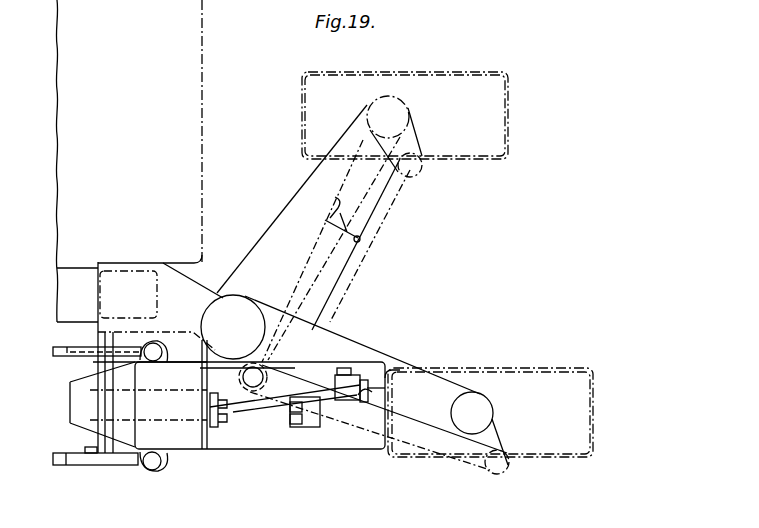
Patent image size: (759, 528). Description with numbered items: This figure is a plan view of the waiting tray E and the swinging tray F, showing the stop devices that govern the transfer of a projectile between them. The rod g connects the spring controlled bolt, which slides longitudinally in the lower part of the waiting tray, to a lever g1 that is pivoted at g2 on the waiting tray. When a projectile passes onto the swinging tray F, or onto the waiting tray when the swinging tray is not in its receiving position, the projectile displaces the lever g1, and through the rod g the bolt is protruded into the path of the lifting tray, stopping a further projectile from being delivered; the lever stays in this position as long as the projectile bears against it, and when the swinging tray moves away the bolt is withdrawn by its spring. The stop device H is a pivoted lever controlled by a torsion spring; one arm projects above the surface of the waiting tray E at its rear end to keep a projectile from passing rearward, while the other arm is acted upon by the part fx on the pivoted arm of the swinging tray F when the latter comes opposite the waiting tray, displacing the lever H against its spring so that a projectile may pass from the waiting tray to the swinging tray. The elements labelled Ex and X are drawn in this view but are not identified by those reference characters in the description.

The swinging tray F is at (417, 88).
The part on the pivoted arm of the swinging tray fx is at (362, 237).
The rod g is at (250, 405).
The lever g1 is at (365, 390).
The pivot of the lever g2 is at (343, 368).
The stop device H is at (377, 410).
The waiting tray E is at (310, 436).
The frame rails Ex is at (55, 452).
The rollers X is at (160, 365).